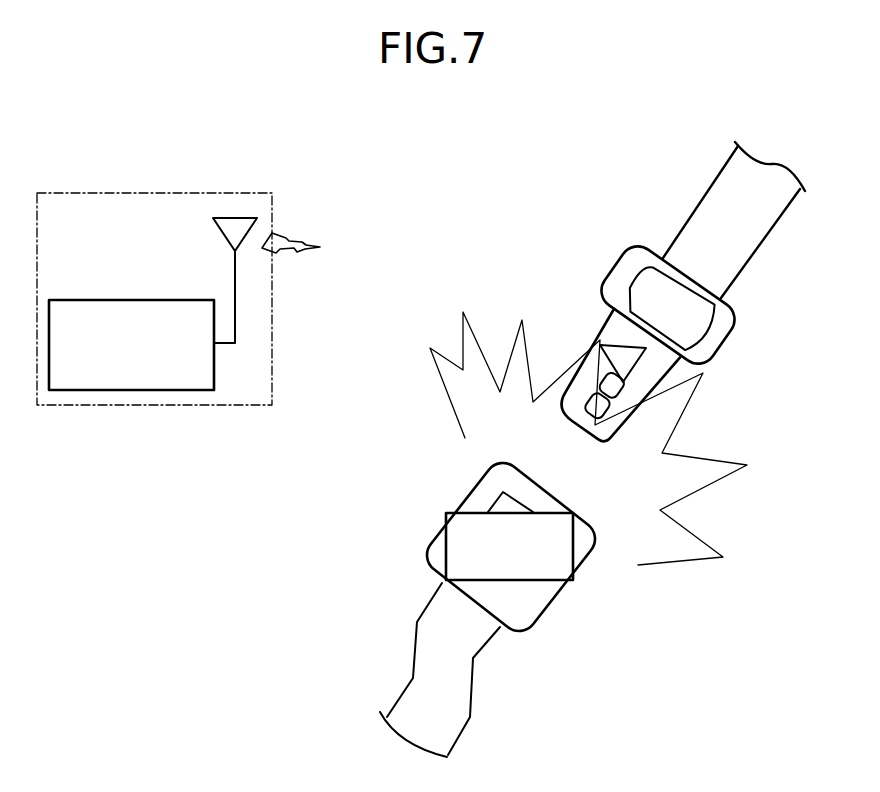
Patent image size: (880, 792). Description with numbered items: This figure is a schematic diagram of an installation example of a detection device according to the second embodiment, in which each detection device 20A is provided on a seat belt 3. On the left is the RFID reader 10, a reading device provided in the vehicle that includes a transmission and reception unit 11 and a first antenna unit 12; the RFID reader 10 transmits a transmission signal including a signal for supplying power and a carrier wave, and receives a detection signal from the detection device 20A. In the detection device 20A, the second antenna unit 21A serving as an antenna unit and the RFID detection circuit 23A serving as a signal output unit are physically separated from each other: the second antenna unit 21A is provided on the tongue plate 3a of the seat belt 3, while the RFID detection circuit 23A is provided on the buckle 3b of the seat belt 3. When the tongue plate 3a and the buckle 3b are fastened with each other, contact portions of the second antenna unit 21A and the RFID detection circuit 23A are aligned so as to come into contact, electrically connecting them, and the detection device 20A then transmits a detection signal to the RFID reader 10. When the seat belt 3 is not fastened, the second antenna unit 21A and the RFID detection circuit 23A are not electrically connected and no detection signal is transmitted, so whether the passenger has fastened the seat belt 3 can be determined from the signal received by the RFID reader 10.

The RFID reader 10 is at (208, 193).
The transmission and reception unit 11 is at (123, 300).
The first antenna unit 12 is at (223, 238).
The seat belt 3 is at (595, 449).
The tongue plate 3a is at (645, 375).
The buckle 3b is at (537, 600).
The detection device 20A is at (495, 238).
The second antenna unit 21A is at (608, 338).
The RFID detection circuit 23A is at (467, 513).